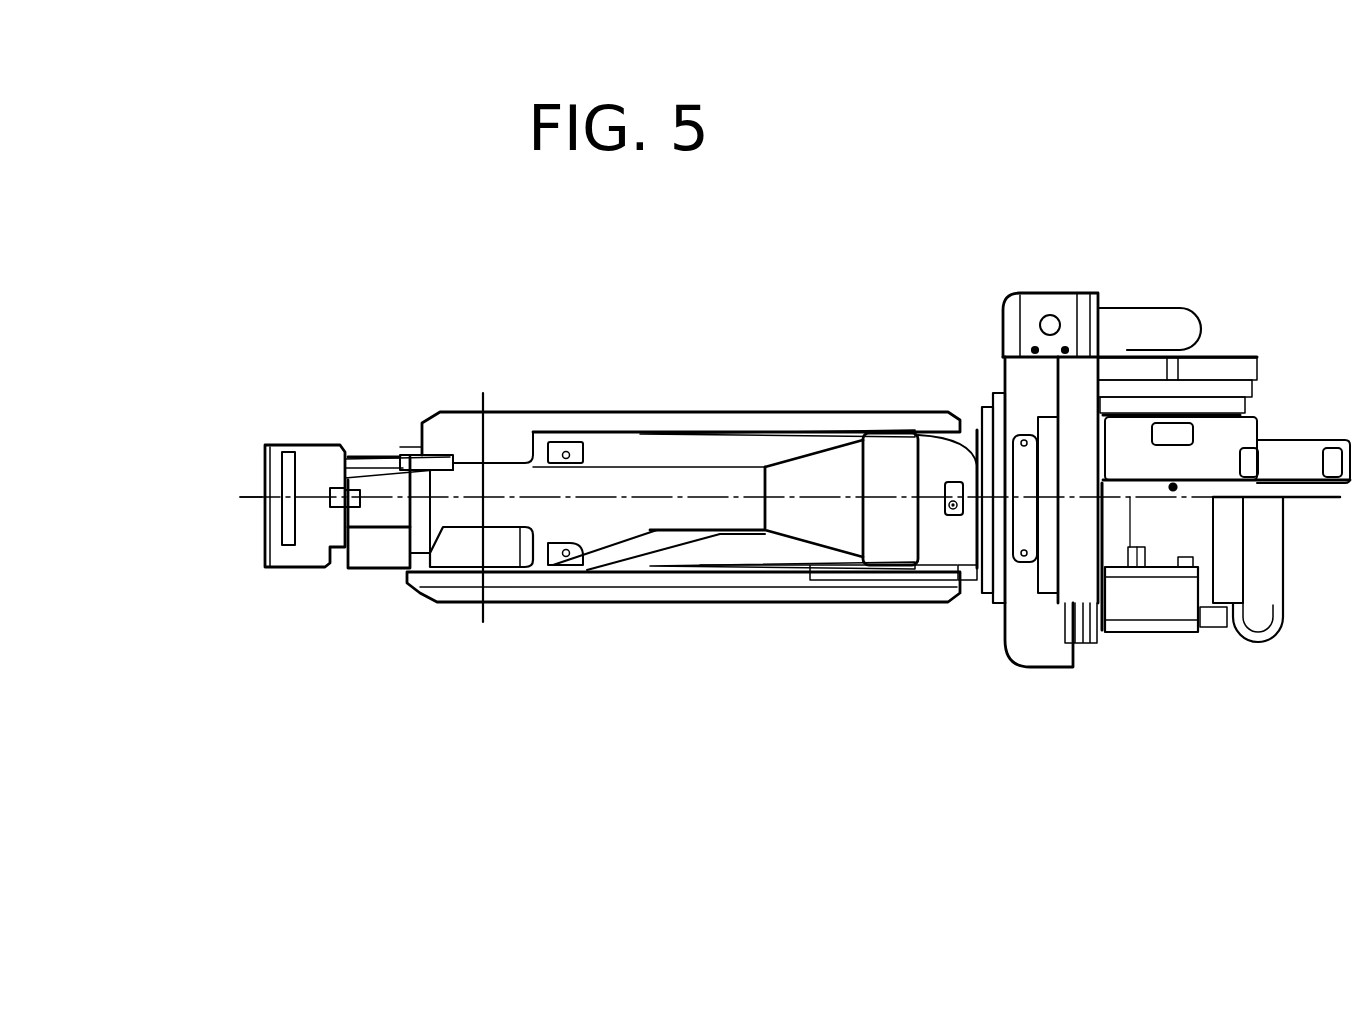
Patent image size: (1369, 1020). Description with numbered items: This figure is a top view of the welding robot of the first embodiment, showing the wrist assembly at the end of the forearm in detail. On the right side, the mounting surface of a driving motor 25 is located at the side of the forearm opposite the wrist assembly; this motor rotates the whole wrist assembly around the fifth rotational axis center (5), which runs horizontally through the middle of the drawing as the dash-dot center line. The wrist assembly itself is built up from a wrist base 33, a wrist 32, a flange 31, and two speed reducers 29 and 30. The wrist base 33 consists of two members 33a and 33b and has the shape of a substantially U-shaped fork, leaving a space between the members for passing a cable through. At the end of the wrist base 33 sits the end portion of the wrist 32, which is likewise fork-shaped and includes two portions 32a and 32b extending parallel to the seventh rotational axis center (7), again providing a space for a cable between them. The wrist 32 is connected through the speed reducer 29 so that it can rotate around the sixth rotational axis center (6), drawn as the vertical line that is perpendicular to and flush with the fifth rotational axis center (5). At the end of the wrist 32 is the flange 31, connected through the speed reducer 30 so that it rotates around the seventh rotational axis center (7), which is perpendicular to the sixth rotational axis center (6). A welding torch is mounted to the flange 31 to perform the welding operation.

The driving motor 25 is at (1160, 610).
The speed reducer 29 is at (497, 433).
The speed reducer 30 is at (292, 525).
The flange 31 is at (262, 470).
The wrist 32 is at (323, 458).
The portion of the wrist 32a is at (383, 448).
The portion of the wrist 32b is at (382, 548).
The wrist base 33 is at (785, 547).
The member of the wrist base 33a is at (740, 432).
The member of the wrist base 33b is at (667, 593).
The fifth rotational axis center 5 is at (858, 505).
The sixth rotational axis center 6 is at (485, 625).
The seventh rotational axis center 7 is at (240, 497).